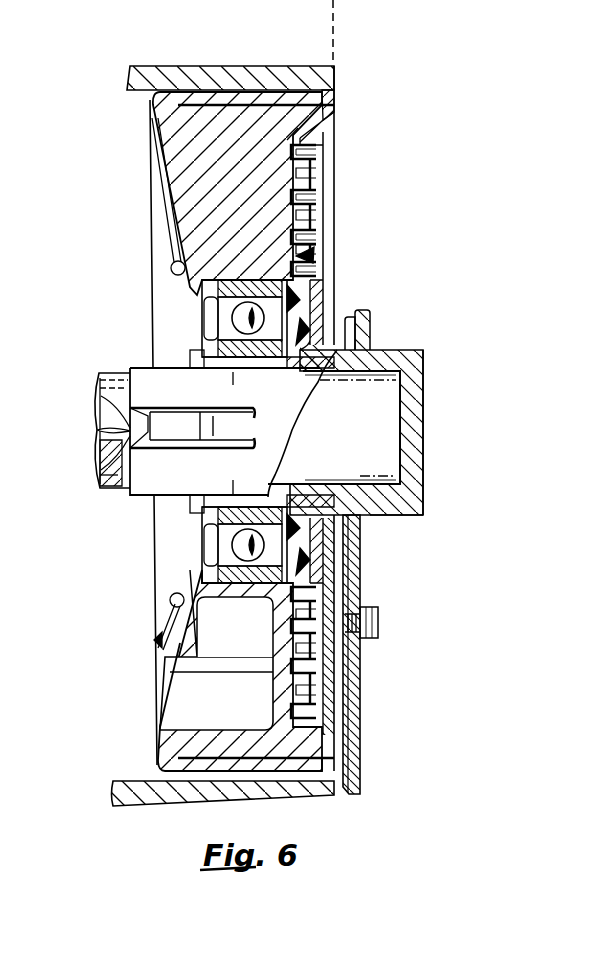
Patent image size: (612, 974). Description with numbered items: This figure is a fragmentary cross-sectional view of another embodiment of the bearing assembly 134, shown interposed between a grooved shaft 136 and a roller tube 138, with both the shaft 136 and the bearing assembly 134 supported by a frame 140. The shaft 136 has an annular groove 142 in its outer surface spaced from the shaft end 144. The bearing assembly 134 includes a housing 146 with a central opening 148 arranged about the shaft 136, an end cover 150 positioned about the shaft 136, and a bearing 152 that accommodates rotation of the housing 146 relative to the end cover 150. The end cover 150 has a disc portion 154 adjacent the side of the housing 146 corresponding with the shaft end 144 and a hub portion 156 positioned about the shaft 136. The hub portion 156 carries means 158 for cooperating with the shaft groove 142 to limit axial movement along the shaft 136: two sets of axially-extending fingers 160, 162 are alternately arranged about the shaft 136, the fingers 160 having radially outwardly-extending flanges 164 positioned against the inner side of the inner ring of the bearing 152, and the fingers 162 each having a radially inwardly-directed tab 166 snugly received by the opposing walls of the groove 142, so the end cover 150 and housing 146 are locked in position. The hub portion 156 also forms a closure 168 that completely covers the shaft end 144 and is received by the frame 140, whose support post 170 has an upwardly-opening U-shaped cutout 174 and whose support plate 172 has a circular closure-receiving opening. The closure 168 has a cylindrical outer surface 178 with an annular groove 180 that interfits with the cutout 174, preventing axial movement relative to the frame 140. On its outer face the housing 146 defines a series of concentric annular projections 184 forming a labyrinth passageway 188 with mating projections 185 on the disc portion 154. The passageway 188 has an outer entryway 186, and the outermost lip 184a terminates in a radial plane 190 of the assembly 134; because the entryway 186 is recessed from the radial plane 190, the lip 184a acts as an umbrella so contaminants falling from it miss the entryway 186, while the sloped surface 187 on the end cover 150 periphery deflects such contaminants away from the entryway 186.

The bearing assembly 134 is at (352, 68).
The grooved shaft 136 is at (104, 375).
The roller tube 138 is at (207, 66).
The frame 140 is at (360, 772).
The annular groove 142 is at (98, 431).
The shaft end 144 is at (415, 416).
The housing 146 is at (160, 188).
The central opening 148 is at (183, 364).
The end cover 150 is at (348, 236).
The bearing assembly 152 is at (240, 290).
The disc portion 154 is at (336, 279).
The hub portion 156 is at (266, 453).
The means for cooperating with the shaft groove 158 is at (103, 490).
The fingers 160 is at (196, 398).
The fingers 162 is at (165, 428).
The flanges 164 is at (154, 409).
The tab 166 is at (103, 409).
The closure 168 is at (428, 385).
The support post 170 is at (360, 697).
The support plate 172 is at (350, 568).
The U-shaped cutout 174 is at (392, 516).
The cylindrical outer surface 178 is at (378, 350).
The annular groove 180 is at (347, 353).
The annular projections 184 is at (313, 197).
The outermost lip 184a is at (338, 112).
The mating projections 185 is at (320, 249).
The outer entryway 186 is at (336, 124).
The sloped surface 187 is at (326, 133).
The labyrinth passageway 188 is at (312, 206).
The radial plane 190 is at (338, 20).